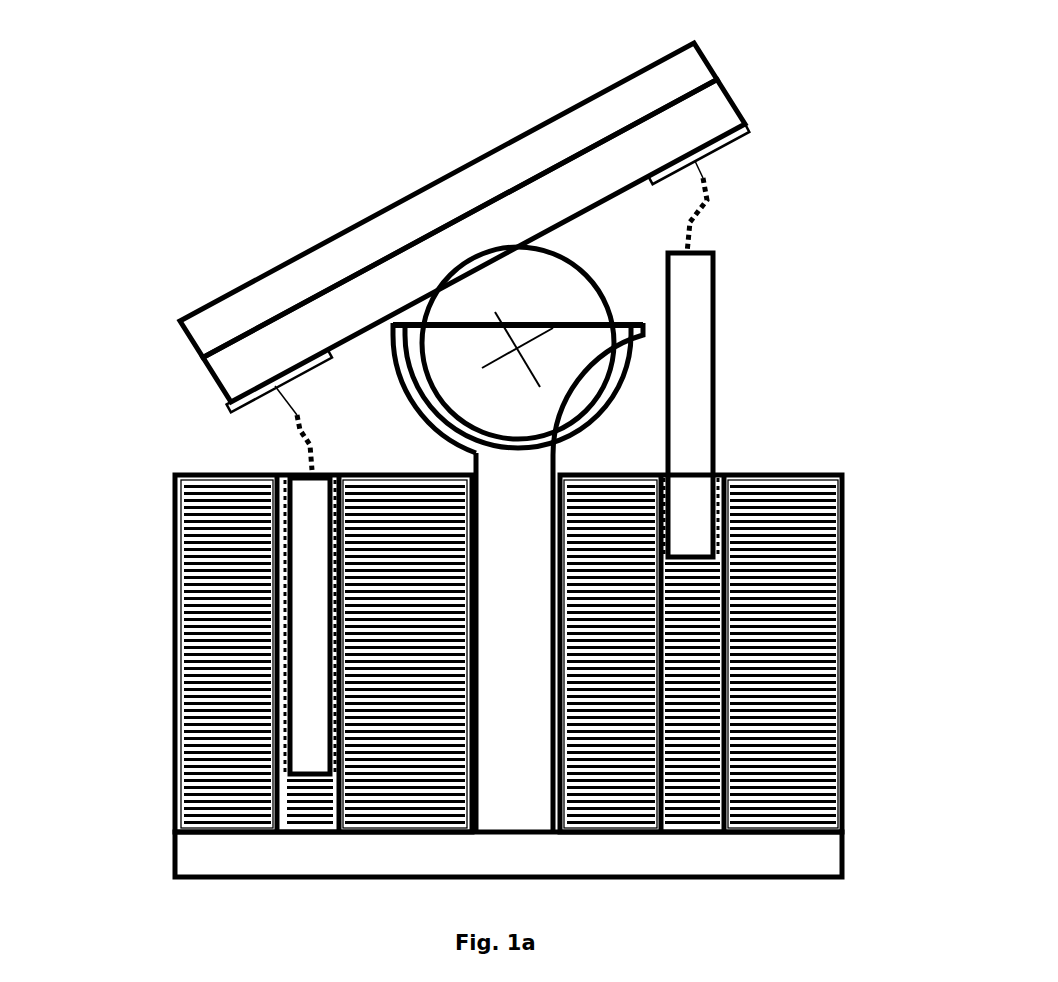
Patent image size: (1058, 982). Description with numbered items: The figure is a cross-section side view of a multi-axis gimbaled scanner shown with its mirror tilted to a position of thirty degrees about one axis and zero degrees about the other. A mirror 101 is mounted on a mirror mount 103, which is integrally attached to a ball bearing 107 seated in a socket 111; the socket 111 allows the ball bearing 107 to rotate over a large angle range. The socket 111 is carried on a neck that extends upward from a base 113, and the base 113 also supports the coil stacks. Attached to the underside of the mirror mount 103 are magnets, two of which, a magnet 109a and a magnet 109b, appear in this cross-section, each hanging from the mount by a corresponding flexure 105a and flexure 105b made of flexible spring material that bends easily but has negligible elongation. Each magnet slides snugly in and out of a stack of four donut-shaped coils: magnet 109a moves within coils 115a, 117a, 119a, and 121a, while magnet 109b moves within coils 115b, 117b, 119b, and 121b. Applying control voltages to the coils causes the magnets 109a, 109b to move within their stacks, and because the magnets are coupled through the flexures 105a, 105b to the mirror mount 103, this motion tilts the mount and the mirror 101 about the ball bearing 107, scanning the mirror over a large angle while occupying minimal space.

The mirror 101 is at (425, 188).
The mirror mount 103 is at (735, 103).
The flexure 105a is at (290, 421).
The flexure 105b is at (723, 193).
The ball bearing 107 is at (590, 266).
The magnet 109a is at (303, 503).
The magnet 109b is at (716, 313).
The socket 111 is at (641, 384).
The base 113 is at (225, 853).
The coil 115a is at (164, 562).
The coil 115b is at (851, 562).
The coil 117a is at (164, 648).
The coil 117b is at (851, 648).
The coil 119a is at (164, 737).
The coil 119b is at (851, 737).
The coil 121a is at (164, 823).
The coil 121b is at (851, 823).